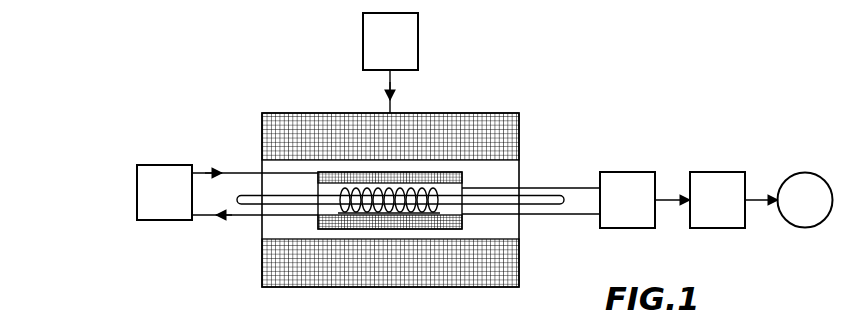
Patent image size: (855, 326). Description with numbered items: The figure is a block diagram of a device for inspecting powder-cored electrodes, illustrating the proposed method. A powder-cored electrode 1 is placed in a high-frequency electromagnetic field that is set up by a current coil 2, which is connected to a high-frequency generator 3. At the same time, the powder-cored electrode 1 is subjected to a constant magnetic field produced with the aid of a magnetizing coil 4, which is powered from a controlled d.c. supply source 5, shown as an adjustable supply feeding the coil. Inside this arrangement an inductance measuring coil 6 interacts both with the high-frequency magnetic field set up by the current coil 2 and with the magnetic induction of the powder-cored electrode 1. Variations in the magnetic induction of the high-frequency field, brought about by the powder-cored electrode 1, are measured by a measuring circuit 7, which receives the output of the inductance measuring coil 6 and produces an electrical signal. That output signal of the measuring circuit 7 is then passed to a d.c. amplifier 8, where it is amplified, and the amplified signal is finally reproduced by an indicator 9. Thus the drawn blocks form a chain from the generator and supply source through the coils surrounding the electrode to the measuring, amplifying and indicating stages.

The powder-cored electrode 1 is at (277, 203).
The current coil 2 is at (462, 226).
The high-frequency generator 3 is at (182, 221).
The magnetizing coil 4 is at (281, 113).
The controlled d.c. supply source 5 is at (419, 32).
The inductance measuring coil 6 is at (440, 190).
The measuring circuit 7 is at (638, 172).
The d.c. amplifier 8 is at (742, 172).
The indicator 9 is at (805, 200).